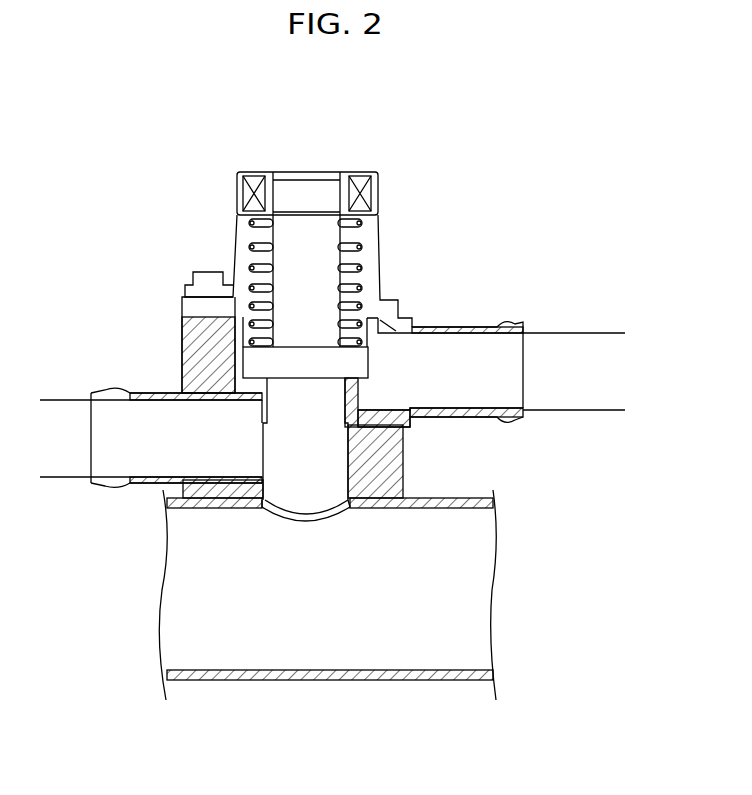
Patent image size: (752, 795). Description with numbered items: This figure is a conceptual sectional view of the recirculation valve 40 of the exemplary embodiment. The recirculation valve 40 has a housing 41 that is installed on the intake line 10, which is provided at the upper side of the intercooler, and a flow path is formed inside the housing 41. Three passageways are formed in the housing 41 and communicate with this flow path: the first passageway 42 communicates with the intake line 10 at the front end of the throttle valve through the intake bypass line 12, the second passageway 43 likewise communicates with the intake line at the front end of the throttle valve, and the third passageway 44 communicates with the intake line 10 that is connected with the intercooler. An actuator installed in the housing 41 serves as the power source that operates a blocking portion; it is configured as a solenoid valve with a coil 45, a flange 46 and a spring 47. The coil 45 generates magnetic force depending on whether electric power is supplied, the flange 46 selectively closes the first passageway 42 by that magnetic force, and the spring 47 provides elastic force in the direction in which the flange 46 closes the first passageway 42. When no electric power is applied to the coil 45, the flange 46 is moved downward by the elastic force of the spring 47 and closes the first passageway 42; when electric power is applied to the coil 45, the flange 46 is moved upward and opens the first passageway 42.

The intake line 10 is at (383, 680).
The intake bypass line 12 is at (63, 398).
The recirculation valve 40 is at (188, 236).
The housing 41 is at (182, 317).
The first passageway 42 is at (440, 336).
The second passageway 43 is at (152, 428).
The third passageway 44 is at (323, 483).
The coil 45 is at (372, 193).
The flange 46 is at (366, 376).
The spring 47 is at (362, 250).